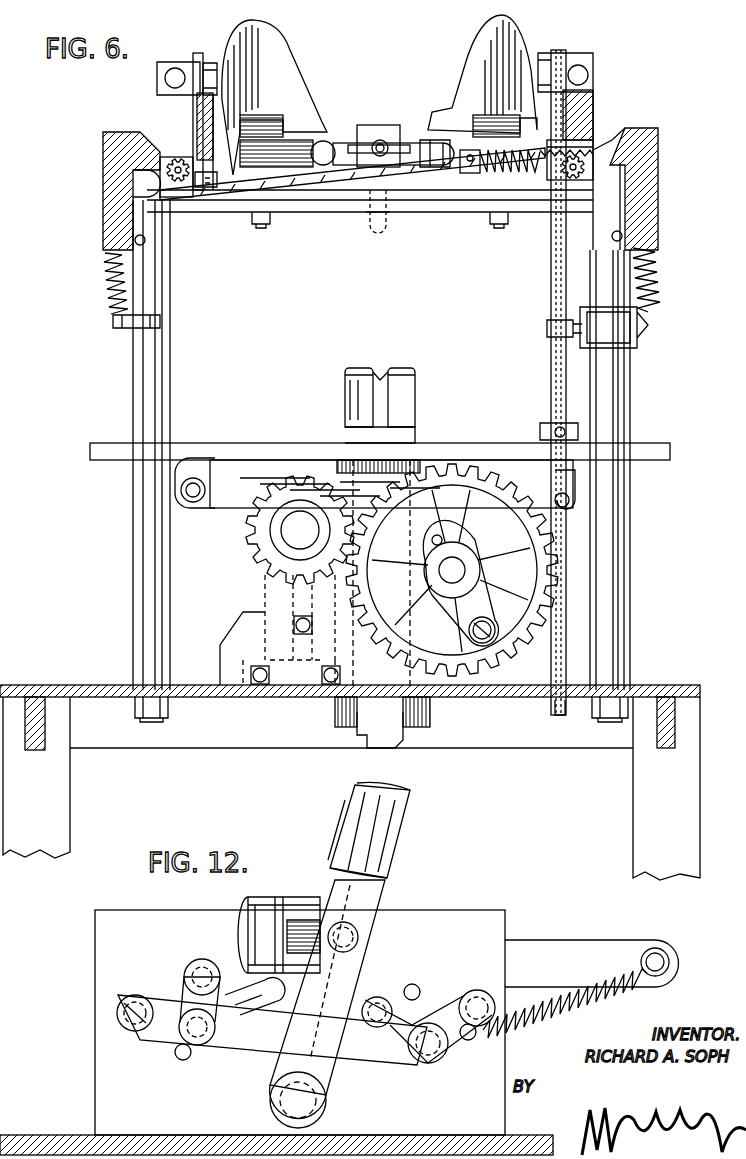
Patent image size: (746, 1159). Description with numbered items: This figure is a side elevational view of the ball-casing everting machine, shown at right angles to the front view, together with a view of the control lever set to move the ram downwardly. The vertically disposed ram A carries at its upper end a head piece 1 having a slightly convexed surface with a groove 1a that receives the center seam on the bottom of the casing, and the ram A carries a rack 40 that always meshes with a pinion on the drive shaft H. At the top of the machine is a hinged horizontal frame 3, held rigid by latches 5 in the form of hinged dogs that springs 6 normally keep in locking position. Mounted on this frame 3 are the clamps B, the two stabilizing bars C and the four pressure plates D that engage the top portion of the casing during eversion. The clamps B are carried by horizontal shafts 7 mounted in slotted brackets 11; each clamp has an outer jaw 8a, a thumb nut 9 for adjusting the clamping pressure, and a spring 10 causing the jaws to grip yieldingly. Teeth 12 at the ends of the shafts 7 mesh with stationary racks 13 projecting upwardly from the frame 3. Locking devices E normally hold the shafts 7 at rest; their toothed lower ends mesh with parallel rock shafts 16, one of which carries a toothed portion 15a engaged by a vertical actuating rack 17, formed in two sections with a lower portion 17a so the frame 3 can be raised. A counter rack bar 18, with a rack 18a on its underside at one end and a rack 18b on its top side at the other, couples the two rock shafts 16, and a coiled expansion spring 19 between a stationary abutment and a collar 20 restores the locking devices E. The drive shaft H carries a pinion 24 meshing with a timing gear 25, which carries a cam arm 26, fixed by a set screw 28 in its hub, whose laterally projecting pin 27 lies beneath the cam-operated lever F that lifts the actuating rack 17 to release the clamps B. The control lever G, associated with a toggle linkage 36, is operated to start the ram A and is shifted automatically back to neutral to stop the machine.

In FIG. 6, the head piece 1 is at (345, 392).
In FIG. 6, the groove 1a is at (382, 372).
In FIG. 6, the top frame 3 is at (290, 212).
In FIG. 6, the latches 5 is at (103, 213).
In FIG. 6, the springs 6 is at (103, 295).
In FIG. 6, the clamp-carrying shafts 7 is at (447, 140).
In FIG. 6, the outer jaw 8a is at (380, 212).
In FIG. 6, the thumb nut 9 is at (378, 125).
In FIG. 6, the spring 10 is at (330, 140).
In FIG. 6, the guides or brackets 11 is at (197, 53).
In FIG. 6, the teeth 12 is at (380, 126).
In FIG. 6, the stationary racks 13 is at (197, 110).
In FIG. 6, the toothed portion 15a is at (175, 158).
In FIG. 6, the rock shafts 16 is at (165, 162).
In FIG. 6, the actuating rack 17 is at (551, 236).
In FIG. 6, the actuating rack bottom portion 17a is at (551, 383).
In FIG. 6, the counter rack bar 18 is at (435, 165).
In FIG. 6, the rack 18a is at (600, 158).
In FIG. 6, the rack 18b is at (213, 188).
In FIG. 6, the coiled expansion spring 19 is at (510, 175).
In FIG. 6, the collar 20 is at (468, 173).
In FIG. 6, the pinion 24 is at (245, 540).
In FIG. 6, the timing gear 25 is at (485, 600).
In FIG. 6, the cam arm 26 is at (485, 605).
In FIG. 6, the pin 27 is at (495, 630).
In FIG. 6, the set screw 28 is at (545, 535).
In FIG. 12, the toggle linkage 36 is at (387, 967).
In FIG. 6, the rack 40 is at (345, 732).
In FIG. 6, the ram A is at (340, 440).
In FIG. 6, the clamps B is at (362, 200).
In FIG. 6, the stabilizing bars C is at (255, 215).
In FIG. 6, the pressure plates D is at (305, 115).
In FIG. 6, the locking devices E is at (165, 112).
In FIG. 6, the cam-operated lever F is at (505, 508).
In FIG. 12, the control lever G is at (365, 895).
In FIG. 6, the drive shaft H is at (290, 535).